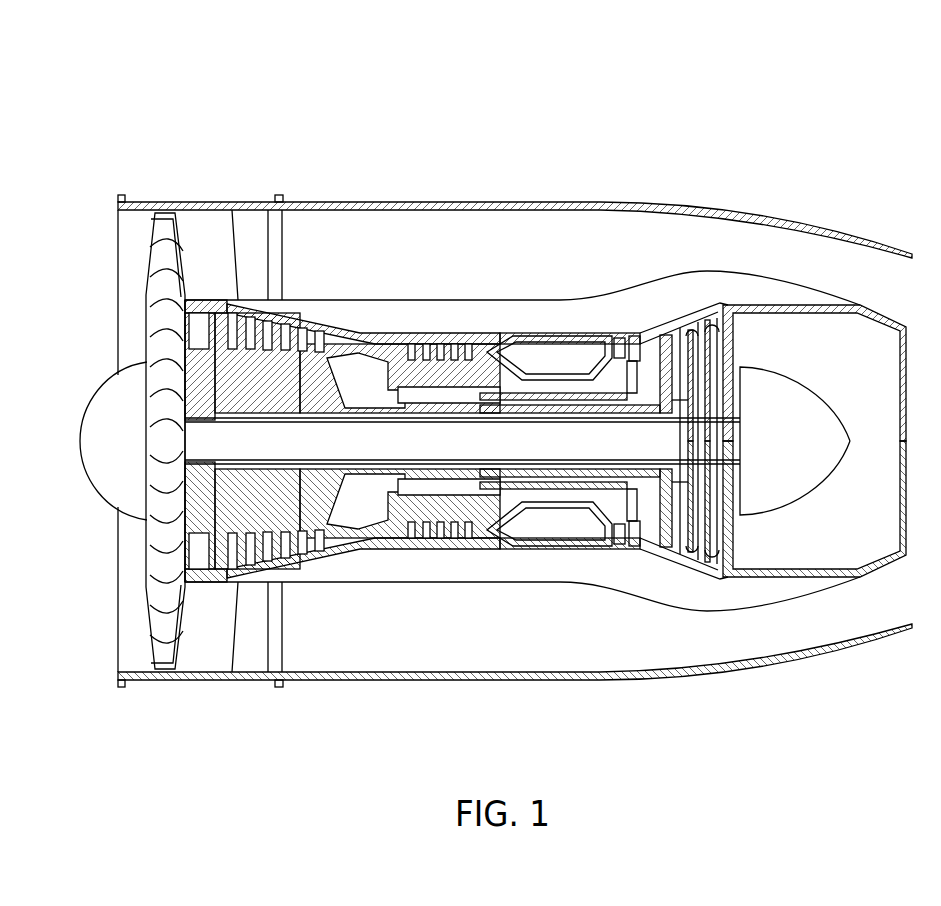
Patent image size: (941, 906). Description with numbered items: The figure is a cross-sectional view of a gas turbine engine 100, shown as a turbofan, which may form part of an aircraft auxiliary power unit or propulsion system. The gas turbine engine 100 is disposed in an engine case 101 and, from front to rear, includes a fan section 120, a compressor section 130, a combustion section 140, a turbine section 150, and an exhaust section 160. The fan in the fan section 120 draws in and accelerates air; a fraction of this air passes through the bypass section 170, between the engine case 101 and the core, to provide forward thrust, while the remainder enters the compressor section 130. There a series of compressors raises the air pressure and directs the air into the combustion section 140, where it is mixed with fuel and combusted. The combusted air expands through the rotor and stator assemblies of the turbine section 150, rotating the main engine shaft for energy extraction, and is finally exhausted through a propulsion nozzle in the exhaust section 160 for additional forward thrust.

The gas turbine engine 100 is at (333, 105).
The engine case 101 is at (340, 202).
The bypass section 170 is at (441, 228).
The fan section 120 is at (195, 712).
The compressor section 130 is at (436, 712).
The combustion section 140 is at (588, 712).
The turbine section 150 is at (590, 712).
The exhaust section 160 is at (738, 712).